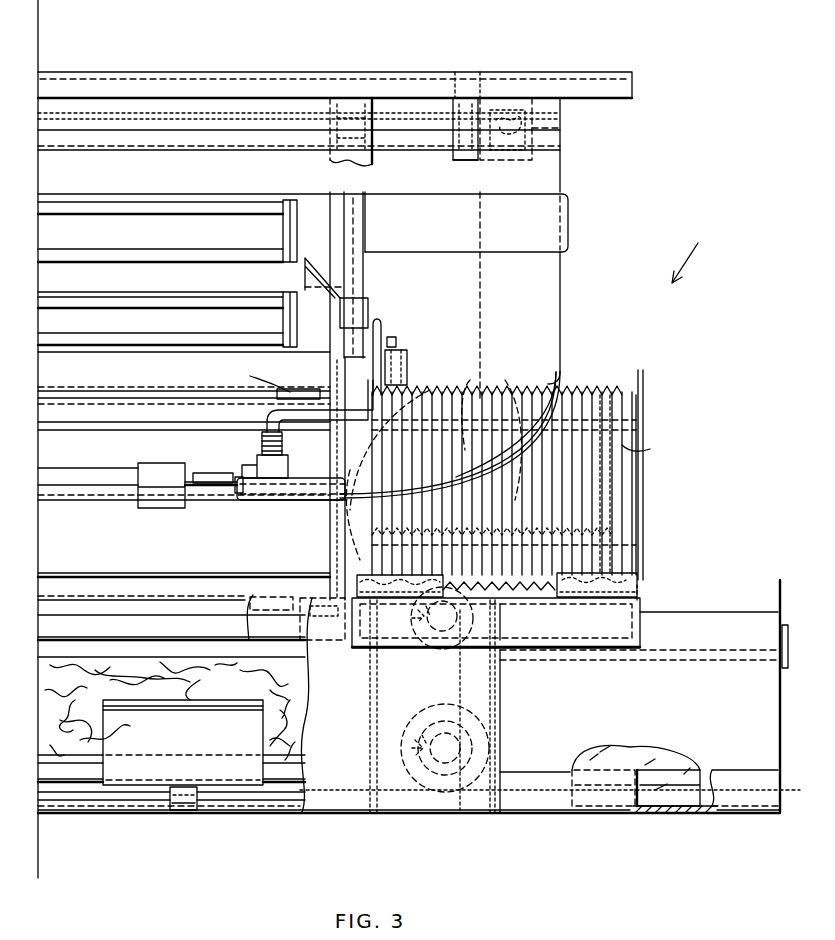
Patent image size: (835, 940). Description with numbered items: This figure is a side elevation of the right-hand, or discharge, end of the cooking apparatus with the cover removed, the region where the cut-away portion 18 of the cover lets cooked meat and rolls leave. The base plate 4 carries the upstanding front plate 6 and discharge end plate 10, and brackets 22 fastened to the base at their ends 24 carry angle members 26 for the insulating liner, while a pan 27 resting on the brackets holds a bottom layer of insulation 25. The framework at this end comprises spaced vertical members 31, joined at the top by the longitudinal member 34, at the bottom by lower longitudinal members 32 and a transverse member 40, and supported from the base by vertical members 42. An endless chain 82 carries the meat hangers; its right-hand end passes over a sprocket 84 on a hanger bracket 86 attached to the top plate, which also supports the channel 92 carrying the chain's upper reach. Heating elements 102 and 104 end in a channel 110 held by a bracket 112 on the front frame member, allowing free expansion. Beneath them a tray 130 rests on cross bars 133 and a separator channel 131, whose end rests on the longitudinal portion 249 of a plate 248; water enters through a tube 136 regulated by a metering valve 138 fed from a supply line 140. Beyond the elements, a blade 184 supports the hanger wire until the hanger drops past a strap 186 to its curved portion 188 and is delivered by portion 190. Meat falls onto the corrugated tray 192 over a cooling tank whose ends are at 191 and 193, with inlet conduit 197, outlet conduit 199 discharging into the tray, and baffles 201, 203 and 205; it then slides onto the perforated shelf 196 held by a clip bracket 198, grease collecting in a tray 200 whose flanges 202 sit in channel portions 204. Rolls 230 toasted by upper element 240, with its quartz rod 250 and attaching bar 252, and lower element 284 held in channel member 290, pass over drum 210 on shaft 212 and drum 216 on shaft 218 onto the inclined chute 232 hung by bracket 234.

The base plate 4 is at (665, 812).
The front plate 6 is at (334, 798).
The discharge end plate 10 is at (500, 696).
The cut-away portion 18 is at (694, 252).
The brackets 22 is at (171, 806).
The bracket attachment 24 is at (188, 810).
The bottom layer of insulation 25 is at (50, 698).
The angle members 26 is at (192, 746).
The pan 27 is at (45, 772).
The vertical members 31 is at (330, 532).
The lower longitudinally extending members 32 is at (268, 594).
The longitudinally extending member 34 is at (334, 72).
The transversely extending member 40 is at (346, 640).
The vertically extending members 42 is at (367, 706).
The endless chain 82 is at (187, 152).
The sprocket 84 is at (560, 128).
The hanger bracket 86 is at (458, 162).
The channel 92 is at (189, 96).
The upper heating element 102 is at (150, 230).
The lower heating element 104 is at (160, 318).
The channel 110 is at (364, 274).
The bracket 112 is at (305, 264).
The tray 130 is at (172, 367).
The channel 131 is at (179, 416).
The cross bars 133 is at (246, 374).
The tube 136 is at (380, 333).
The metering valve 138 is at (285, 458).
The supply line 140 is at (215, 478).
The blade 184 is at (466, 232).
The strap 186 is at (560, 288).
The strap portion 188 is at (559, 378).
The strap portion 190 is at (301, 496).
The upper end of tank 191 is at (636, 425).
The corrugated tray 192 is at (612, 478).
The lower end of tank 193 is at (628, 520).
The shelf 196 is at (530, 605).
The inlet conduit 197 is at (650, 444).
The clip bracket 198 is at (640, 626).
The outlet conduit 199 is at (396, 342).
The tray 200 is at (584, 649).
The baffle 201 is at (618, 386).
The flanges 202 is at (608, 598).
The baffle 203 is at (510, 378).
The channel portions 204 is at (642, 604).
The baffle 205 is at (476, 384).
The drum 210 is at (462, 650).
The shaft 212 is at (413, 646).
The second drum 216 is at (418, 716).
The shaft 218 is at (492, 742).
The roll 230 is at (649, 750).
The inclined chute 232 is at (716, 614).
The bracket 234 is at (786, 618).
The heating element 240 is at (211, 490).
The plate 248 is at (419, 394).
The longitudinally extending portion 249 is at (314, 389).
The quartz rod 250 is at (65, 480).
The attaching bar 252 is at (145, 510).
The heating element 284 is at (98, 600).
The channel member 290 is at (322, 619).